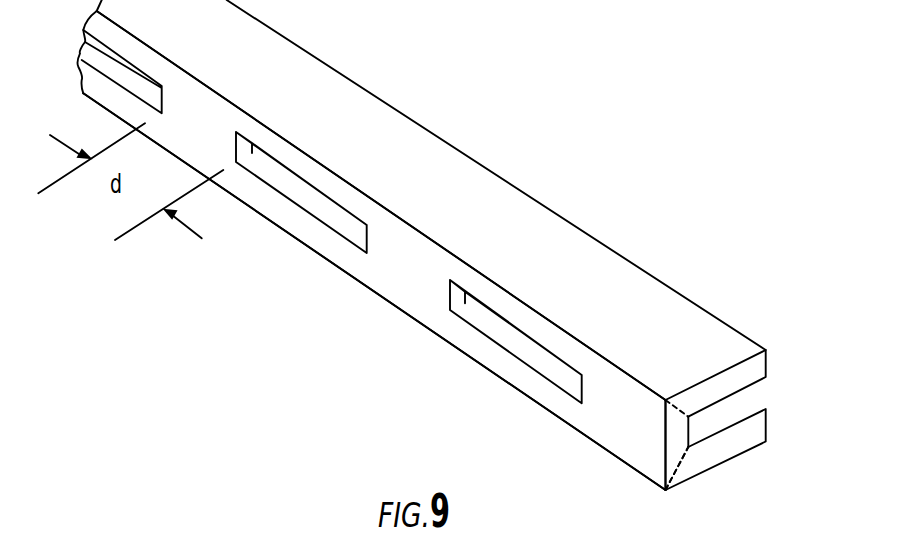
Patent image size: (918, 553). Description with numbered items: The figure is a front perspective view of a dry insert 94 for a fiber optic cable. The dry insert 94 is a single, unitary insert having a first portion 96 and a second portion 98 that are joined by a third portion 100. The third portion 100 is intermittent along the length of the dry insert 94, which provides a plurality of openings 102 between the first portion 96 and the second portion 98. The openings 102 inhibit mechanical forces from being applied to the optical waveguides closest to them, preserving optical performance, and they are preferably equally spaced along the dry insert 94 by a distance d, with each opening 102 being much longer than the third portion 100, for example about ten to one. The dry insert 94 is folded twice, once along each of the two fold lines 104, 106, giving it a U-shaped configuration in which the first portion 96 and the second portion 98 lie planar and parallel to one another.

The dry insert 94 is at (442, 269).
The first portion 96 is at (743, 337).
The second portion 98 is at (745, 445).
The third portion 100 is at (633, 428).
The openings 102 is at (535, 363).
The fold line 104 is at (682, 410).
The fold line 106 is at (693, 467).